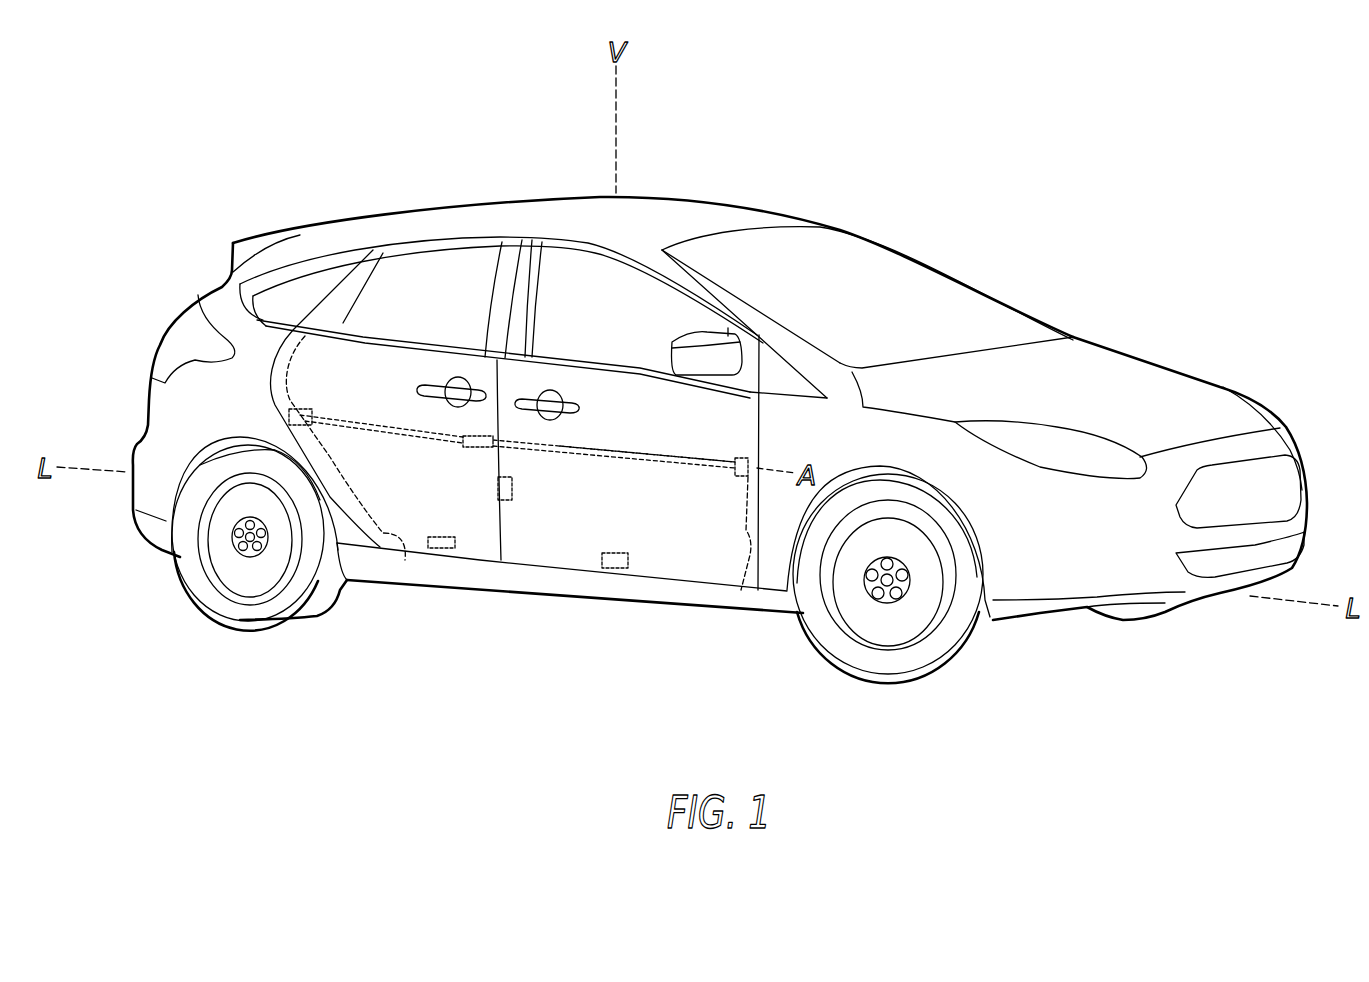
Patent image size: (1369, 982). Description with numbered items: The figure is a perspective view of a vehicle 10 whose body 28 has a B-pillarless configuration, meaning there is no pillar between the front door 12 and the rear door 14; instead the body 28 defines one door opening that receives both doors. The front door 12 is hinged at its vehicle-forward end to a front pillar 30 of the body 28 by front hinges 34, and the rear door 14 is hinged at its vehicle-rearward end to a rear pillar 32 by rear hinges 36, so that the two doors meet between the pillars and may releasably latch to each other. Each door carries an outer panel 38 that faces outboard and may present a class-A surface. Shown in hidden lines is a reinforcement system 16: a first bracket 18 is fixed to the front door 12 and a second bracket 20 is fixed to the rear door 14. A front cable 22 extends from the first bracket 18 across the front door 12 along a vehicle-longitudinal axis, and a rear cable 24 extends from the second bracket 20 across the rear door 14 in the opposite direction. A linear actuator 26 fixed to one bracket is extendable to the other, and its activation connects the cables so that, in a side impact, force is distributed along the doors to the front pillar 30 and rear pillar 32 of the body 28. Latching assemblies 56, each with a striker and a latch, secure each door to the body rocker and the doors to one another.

The vehicle 10 is at (947, 158).
The front door 12 is at (573, 567).
The rear door 14 is at (484, 562).
The reinforcement system 16 is at (608, 410).
The first bracket 18 is at (522, 453).
The second bracket 20 is at (477, 450).
The front cable 22 is at (600, 458).
The rear cable 24 is at (385, 420).
The linear actuator 26 is at (490, 383).
The body 28 is at (1139, 335).
The front pillar 30 is at (741, 590).
The rear pillar 32 is at (405, 560).
The front hinges 34 is at (760, 466).
The rear hinges 36 is at (287, 412).
The outer panel 38 is at (541, 452).
The latching assembly 56 is at (443, 549).